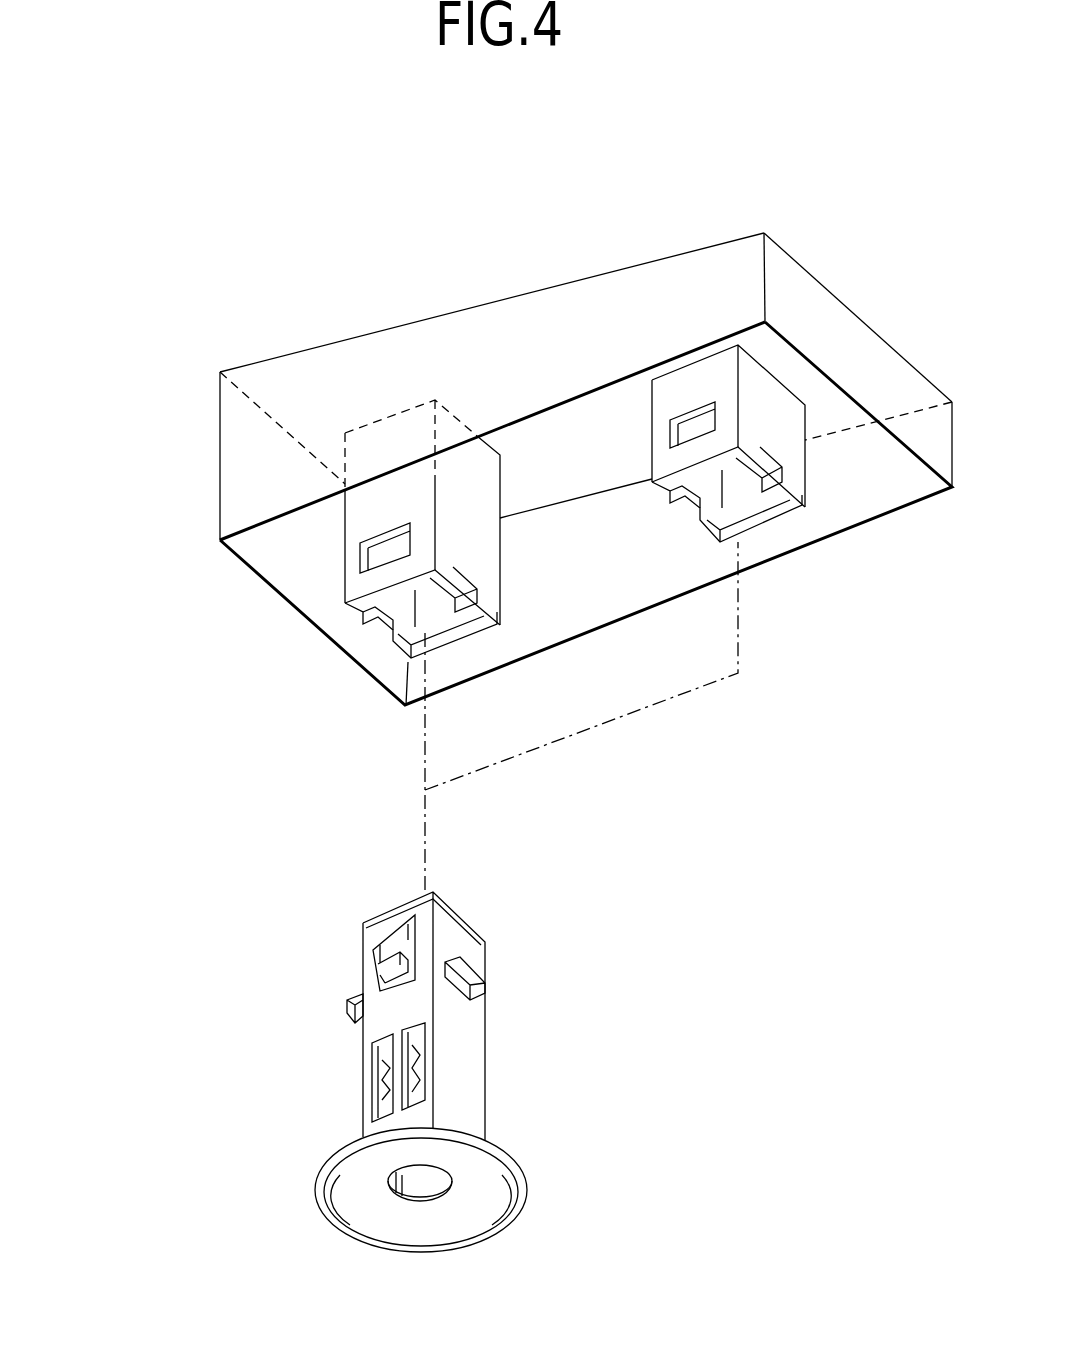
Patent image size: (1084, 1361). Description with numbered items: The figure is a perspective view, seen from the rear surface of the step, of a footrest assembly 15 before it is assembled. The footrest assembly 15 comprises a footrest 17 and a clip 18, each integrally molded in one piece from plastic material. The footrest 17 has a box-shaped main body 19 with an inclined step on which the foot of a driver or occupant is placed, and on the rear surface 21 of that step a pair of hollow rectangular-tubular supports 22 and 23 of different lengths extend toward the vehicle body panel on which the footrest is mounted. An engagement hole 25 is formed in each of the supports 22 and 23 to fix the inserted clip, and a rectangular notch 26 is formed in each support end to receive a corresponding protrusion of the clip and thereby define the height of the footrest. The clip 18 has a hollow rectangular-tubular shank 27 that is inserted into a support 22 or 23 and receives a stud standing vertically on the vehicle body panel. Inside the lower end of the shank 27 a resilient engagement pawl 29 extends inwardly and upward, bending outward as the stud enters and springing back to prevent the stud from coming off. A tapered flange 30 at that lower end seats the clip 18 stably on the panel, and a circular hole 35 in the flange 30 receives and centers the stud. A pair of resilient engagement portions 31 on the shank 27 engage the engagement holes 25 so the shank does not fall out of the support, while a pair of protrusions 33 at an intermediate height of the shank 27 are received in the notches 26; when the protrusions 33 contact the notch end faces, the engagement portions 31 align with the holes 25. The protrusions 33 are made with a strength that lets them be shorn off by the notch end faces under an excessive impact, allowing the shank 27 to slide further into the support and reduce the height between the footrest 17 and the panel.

The footrest assembly 15 is at (160, 450).
The footrest 17 is at (306, 349).
The clip 18 is at (355, 1043).
The main body 19 is at (606, 288).
The rear surface 21 is at (578, 467).
The support 22 is at (502, 562).
The support 23 is at (651, 462).
The engagement hole 25 is at (372, 552).
The notch 26 is at (462, 588).
The shank 27 is at (487, 1043).
The resilient engagement pawl 29 is at (376, 1105).
The flange 30 is at (508, 1147).
The resilient engagement portion 31 is at (375, 947).
The protrusion 33 is at (487, 985).
The circular hole 35 is at (422, 1190).